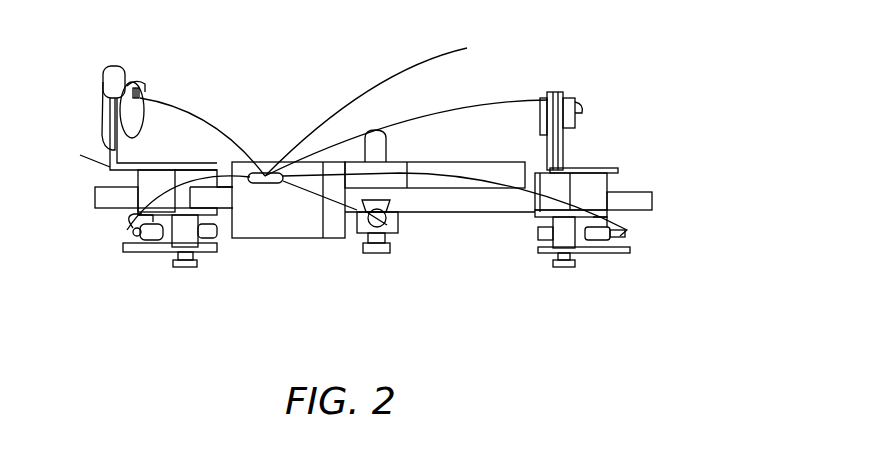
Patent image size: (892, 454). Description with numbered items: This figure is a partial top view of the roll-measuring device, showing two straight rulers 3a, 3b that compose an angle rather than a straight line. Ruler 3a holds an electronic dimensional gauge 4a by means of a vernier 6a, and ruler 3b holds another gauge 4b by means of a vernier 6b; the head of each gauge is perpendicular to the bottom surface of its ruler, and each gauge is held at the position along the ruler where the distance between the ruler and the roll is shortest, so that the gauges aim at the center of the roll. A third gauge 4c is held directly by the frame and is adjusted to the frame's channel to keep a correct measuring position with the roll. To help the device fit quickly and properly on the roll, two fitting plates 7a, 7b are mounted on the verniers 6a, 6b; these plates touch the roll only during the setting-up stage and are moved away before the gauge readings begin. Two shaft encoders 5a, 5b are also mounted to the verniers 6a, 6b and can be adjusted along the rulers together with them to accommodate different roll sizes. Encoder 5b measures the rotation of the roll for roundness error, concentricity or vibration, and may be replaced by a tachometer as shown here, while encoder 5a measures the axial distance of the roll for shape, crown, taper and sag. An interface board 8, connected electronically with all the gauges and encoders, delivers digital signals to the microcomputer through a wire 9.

The straight ruler 3a is at (105, 198).
The straight ruler 3b is at (632, 203).
The electronic dimensional gauge 4a is at (137, 232).
The electronic dimensional gauge 4b is at (628, 234).
The gauge 4c is at (380, 223).
The shaft encoder 5a is at (122, 78).
The shaft encoder 5b is at (555, 93).
The vernier 6a is at (150, 185).
The vernier 6b is at (595, 185).
The fitting plate 7a is at (137, 248).
The fitting plate 7b is at (550, 250).
The interface board 8 is at (278, 222).
The wire 9 is at (397, 75).